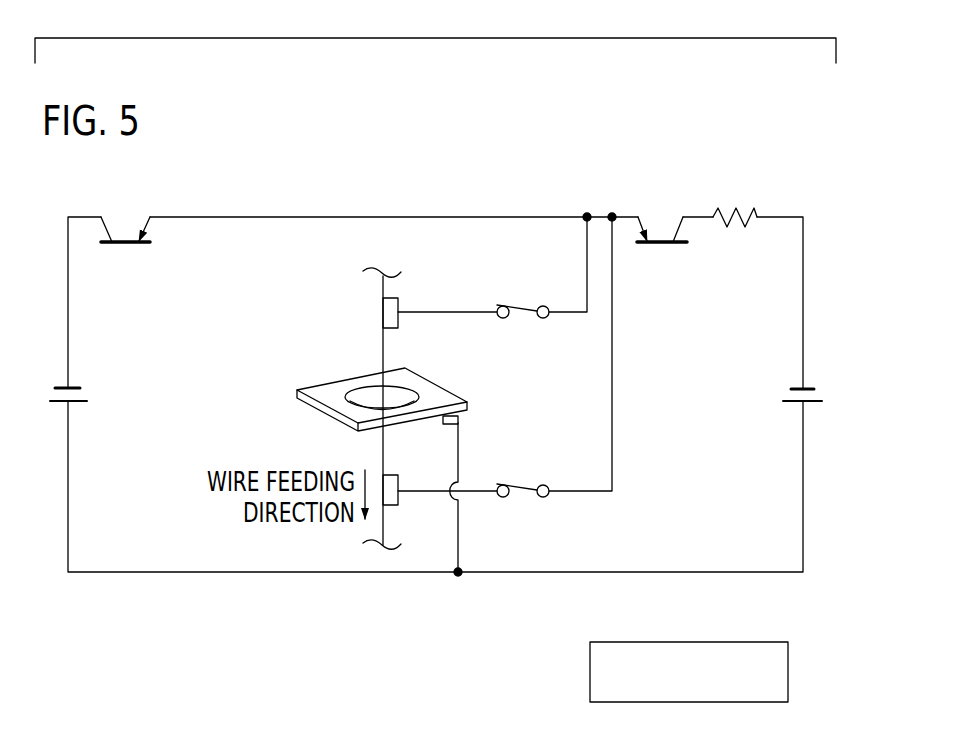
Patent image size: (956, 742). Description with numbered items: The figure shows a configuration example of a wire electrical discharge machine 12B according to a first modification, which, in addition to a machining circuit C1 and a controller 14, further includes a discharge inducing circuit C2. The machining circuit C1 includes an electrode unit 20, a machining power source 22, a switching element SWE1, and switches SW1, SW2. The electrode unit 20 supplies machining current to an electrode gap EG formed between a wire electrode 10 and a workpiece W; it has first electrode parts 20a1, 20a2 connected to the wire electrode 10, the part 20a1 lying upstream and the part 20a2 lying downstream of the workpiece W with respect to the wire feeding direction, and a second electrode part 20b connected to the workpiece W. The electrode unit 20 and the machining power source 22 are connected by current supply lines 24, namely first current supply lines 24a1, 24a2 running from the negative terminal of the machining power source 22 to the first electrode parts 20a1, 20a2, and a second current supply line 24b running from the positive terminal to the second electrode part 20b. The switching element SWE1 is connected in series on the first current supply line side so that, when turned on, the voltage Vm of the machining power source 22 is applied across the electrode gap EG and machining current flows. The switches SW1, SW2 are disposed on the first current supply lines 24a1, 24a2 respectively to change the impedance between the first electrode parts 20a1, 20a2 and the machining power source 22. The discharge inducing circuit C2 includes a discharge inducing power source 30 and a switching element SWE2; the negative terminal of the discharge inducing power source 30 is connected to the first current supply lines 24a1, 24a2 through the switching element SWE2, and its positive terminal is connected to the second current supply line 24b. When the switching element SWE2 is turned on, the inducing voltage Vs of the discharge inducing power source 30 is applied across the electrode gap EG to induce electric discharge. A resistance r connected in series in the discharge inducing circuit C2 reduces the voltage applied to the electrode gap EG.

The wire electrical discharge machine 12B is at (222, 155).
The machining power source 22 is at (53, 381).
The discharge inducing power source 30 is at (815, 381).
The electrode unit 20 is at (294, 408).
The first electrode part 20a1 is at (383, 311).
The first electrode part 20a2 is at (383, 474).
The second electrode part 20b is at (447, 420).
The wire electrode 10 is at (385, 352).
The current supply lines 24 is at (619, 394).
The first current supply line 24a1 is at (588, 297).
The first current supply line 24a2 is at (613, 345).
The second current supply line 24b is at (460, 453).
The controller 14 is at (738, 641).
The switching element SWE1 is at (124, 251).
The switching element SWE2 is at (663, 212).
The switch SW1 is at (511, 299).
The switch SW2 is at (530, 500).
The machining circuit C1 is at (467, 213).
The discharge inducing circuit C2 is at (770, 211).
The resistance r is at (728, 206).
The workpiece W is at (331, 389).
The electrode gap EG is at (366, 396).
The voltage Vm is at (48, 419).
The inducing voltage Vs is at (824, 419).